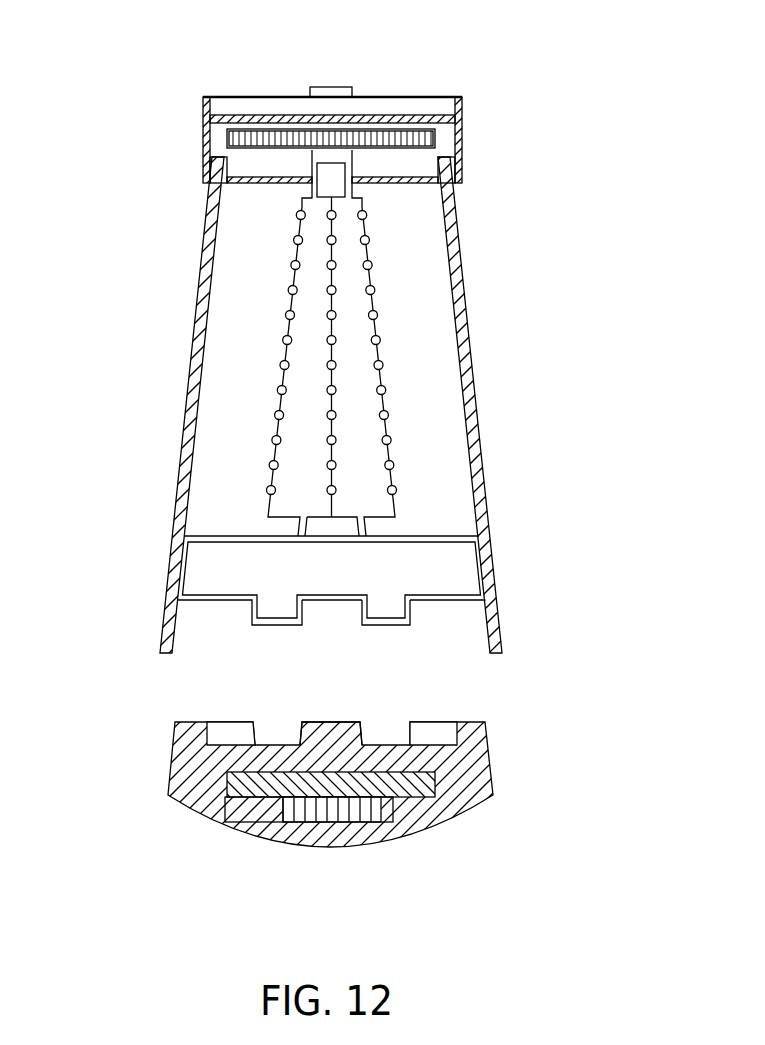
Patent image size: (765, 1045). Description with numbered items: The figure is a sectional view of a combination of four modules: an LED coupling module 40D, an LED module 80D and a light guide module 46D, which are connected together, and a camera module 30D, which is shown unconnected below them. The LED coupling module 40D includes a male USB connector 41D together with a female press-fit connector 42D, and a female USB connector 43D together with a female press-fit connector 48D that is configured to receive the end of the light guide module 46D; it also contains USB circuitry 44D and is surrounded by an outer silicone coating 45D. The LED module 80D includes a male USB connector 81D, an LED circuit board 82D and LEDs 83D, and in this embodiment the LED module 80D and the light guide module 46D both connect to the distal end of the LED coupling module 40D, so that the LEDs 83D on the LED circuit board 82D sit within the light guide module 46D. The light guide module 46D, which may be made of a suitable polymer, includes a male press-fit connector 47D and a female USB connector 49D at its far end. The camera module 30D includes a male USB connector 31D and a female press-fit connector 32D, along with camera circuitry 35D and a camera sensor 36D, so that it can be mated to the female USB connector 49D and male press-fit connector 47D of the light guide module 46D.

The camera module 30D is at (382, 478).
The male USB connector 31D is at (340, 730).
The female press-fit connector 32D is at (227, 735).
The camera circuitry 35D is at (248, 787).
The camera sensor 36D is at (367, 810).
The LED coupling module 40D is at (462, 147).
The male USB connector 41D is at (328, 98).
The female press-fit connector 42D is at (253, 107).
The female USB connector 43D is at (322, 152).
The USB circuitry 44D is at (417, 143).
The outer silicone coating 45D is at (462, 112).
The light guide module 46D is at (495, 510).
The male press-fit connector 47D is at (321, 598).
The female press-fit connector 48D is at (233, 150).
The female USB connector 49D is at (327, 615).
The LED module 80D is at (237, 366).
The male USB connector 81D is at (328, 178).
The LED circuit board 82D is at (305, 437).
The LEDs 83D is at (290, 315).